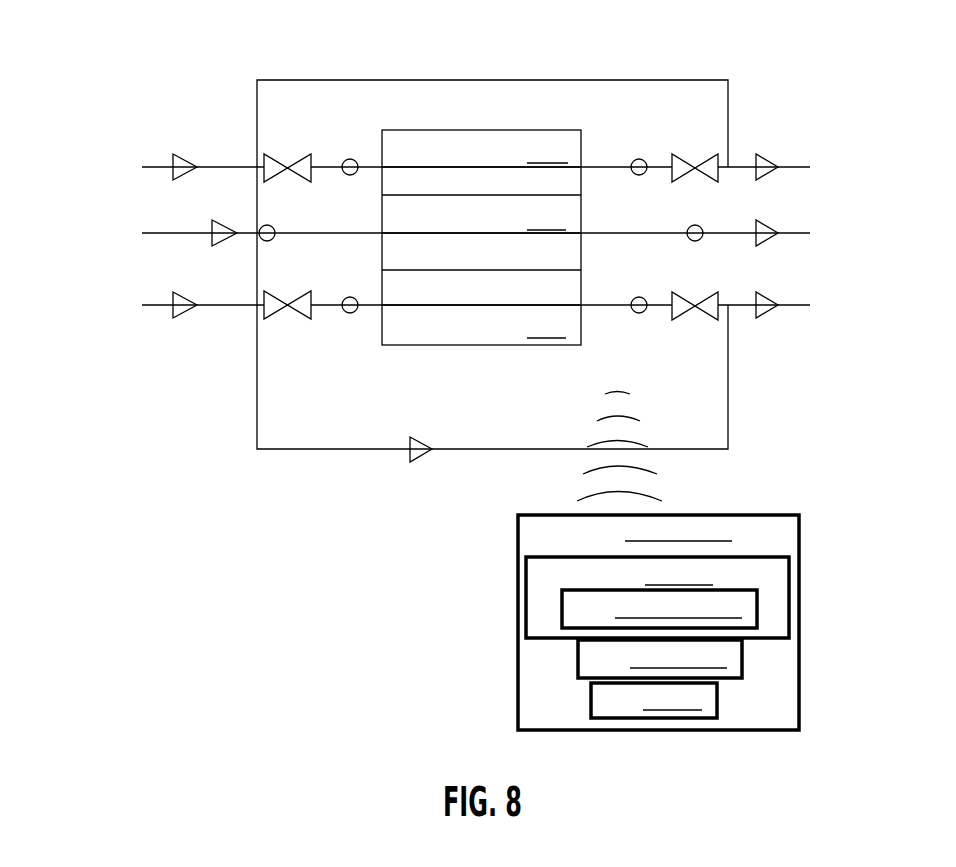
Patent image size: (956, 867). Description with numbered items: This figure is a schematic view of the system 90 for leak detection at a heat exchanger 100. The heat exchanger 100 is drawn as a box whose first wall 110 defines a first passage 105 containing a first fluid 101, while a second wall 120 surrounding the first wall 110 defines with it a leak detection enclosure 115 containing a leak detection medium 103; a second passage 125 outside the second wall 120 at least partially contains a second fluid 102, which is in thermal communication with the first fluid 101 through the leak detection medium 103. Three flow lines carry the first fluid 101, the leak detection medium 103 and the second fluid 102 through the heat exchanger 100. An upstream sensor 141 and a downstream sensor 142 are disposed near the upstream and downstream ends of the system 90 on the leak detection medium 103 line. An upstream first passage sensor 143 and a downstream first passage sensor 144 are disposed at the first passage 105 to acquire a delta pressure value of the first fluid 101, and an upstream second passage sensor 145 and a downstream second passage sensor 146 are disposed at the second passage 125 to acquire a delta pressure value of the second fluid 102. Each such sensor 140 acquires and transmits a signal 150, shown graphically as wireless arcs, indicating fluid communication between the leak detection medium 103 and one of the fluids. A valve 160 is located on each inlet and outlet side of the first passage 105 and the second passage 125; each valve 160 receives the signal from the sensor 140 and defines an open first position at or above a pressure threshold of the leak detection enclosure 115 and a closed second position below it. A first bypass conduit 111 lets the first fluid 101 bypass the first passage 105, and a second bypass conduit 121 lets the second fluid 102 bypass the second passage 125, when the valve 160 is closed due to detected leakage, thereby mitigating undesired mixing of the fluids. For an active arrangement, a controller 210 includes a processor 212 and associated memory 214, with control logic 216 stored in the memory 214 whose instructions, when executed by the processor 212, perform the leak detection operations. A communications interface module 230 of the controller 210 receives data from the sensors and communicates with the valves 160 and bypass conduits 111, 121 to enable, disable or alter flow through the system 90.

The system 90 is at (685, 44).
The heat exchanger 100 is at (490, 347).
The first fluid 101 is at (152, 306).
The second fluid 102 is at (158, 167).
The leak detection medium 103 is at (168, 232).
The first passage 105 is at (481, 323).
The first wall 110 is at (553, 276).
The first bypass conduit 111 is at (257, 378).
The leak detection enclosure 115 is at (481, 216).
The second wall 120 is at (553, 193).
The second bypass conduit 121 is at (257, 103).
The second passage 125 is at (481, 149).
The sensor 140 is at (595, 348).
The upstream sensor 141 is at (273, 227).
The downstream sensor 142 is at (701, 227).
The upstream first passage sensor 143 is at (350, 313).
The downstream first passage sensor 144 is at (639, 313).
The upstream second passage sensor 145 is at (350, 159).
The downstream second passage sensor 146 is at (640, 159).
The signal 150 is at (648, 488).
The valve 160 is at (297, 160).
The controller 210 is at (658, 622).
The processor 212 is at (660, 659).
The memory 214 is at (657, 597).
The control logic 216 is at (659, 609).
The communications interface module 230 is at (654, 700).